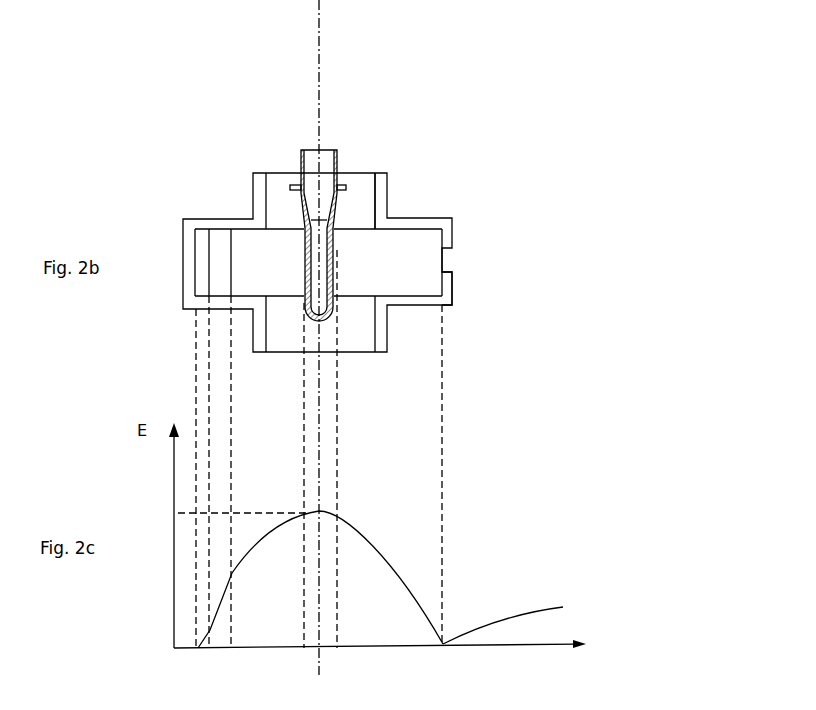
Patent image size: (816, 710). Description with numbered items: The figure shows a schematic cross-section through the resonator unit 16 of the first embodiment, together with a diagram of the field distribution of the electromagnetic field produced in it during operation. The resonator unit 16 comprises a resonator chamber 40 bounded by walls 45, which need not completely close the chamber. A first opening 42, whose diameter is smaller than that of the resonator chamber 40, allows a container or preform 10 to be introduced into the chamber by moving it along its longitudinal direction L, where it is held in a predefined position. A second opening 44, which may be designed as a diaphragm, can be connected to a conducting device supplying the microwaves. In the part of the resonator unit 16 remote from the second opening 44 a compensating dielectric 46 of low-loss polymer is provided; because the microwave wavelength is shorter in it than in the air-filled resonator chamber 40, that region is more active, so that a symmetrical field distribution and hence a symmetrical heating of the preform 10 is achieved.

The resonator unit 16 is at (190, 166).
The walls 45 is at (228, 228).
The compensating dielectric 46 is at (220, 253).
The resonator chamber 40 is at (402, 245).
The first opening 42 is at (373, 172).
The second opening 44 is at (447, 260).
The preform 10 is at (338, 157).
The longitudinal direction L is at (320, 70).